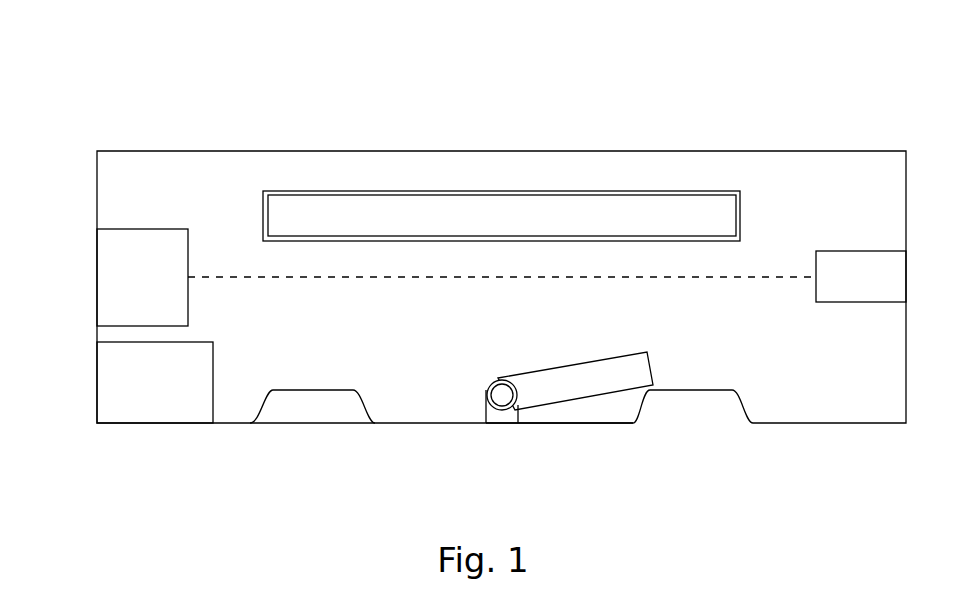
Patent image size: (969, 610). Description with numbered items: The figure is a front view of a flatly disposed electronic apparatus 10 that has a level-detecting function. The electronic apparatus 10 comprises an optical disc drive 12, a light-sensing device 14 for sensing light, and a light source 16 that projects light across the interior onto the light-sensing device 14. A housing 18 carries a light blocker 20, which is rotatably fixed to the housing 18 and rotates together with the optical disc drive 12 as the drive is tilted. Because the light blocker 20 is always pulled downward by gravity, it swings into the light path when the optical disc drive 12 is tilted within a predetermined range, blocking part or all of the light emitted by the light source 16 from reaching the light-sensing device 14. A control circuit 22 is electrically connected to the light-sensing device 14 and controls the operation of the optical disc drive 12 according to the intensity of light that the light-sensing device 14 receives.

The electronic apparatus 10 is at (132, 58).
The optical disc drive 12 is at (800, 160).
The light-sensing device 14 is at (108, 255).
The light source 16 is at (895, 273).
The housing 18 is at (393, 423).
The light blocker 20 is at (595, 385).
The control circuit 22 is at (150, 410).